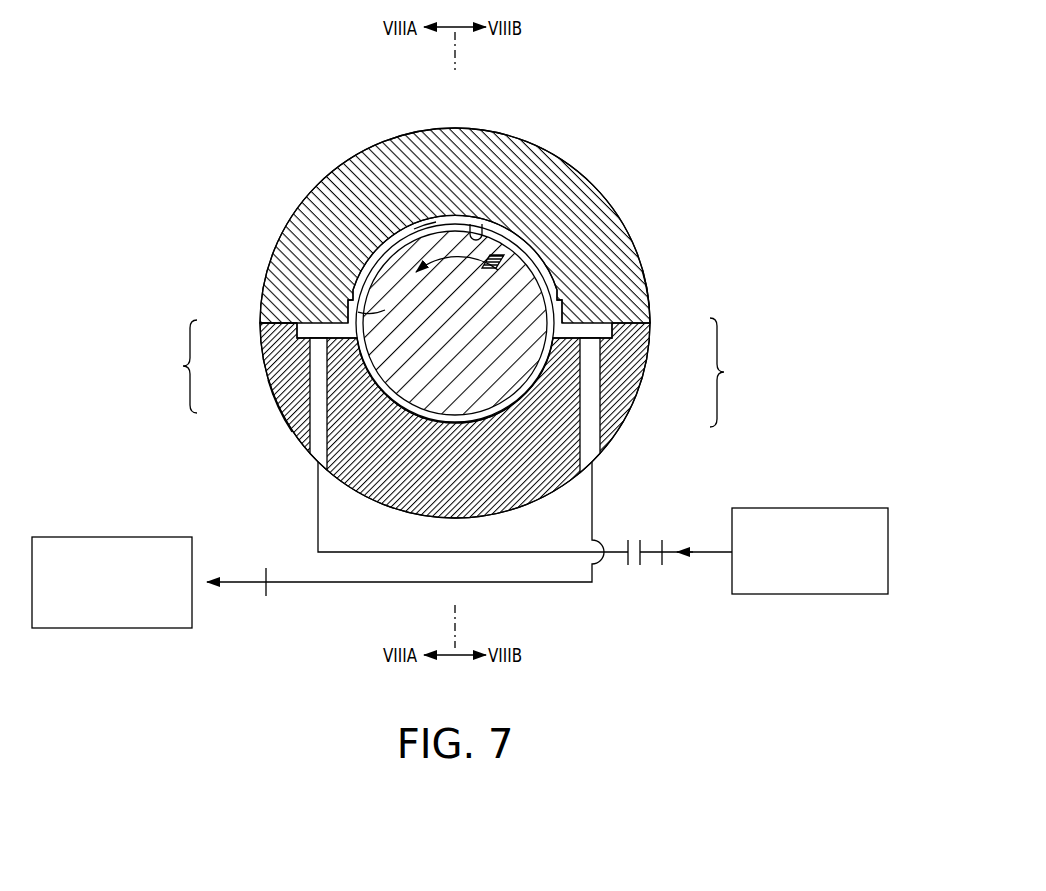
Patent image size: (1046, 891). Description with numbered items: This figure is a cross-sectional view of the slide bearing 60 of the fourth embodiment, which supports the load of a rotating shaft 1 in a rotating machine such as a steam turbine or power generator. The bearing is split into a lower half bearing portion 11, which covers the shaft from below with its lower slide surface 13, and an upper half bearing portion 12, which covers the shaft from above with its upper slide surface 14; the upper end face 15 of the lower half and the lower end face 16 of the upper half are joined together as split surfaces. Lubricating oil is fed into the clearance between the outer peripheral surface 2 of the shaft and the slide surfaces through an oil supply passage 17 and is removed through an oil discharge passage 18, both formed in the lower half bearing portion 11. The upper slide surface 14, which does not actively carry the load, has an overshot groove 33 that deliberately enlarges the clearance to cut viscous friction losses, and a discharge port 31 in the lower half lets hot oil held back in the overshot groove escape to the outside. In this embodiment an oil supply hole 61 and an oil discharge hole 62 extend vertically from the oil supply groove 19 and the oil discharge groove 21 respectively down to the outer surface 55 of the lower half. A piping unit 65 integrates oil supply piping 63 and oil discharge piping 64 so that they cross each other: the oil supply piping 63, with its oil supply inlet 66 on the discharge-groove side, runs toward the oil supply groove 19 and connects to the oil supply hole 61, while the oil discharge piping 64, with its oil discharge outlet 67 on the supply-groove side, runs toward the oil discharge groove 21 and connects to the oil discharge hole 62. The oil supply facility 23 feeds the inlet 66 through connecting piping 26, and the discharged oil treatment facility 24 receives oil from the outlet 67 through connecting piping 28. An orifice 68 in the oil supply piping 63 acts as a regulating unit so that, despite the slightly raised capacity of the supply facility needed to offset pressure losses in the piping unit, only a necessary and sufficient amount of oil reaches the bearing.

The rotating shaft 1 is at (532, 307).
The outer peripheral surface 2 is at (383, 262).
The lower half bearing portion 11 is at (549, 448).
The upper half bearing portion 12 is at (537, 168).
The lower slide surface 13 is at (375, 389).
The upper slide surface 14 is at (475, 230).
The upper end face 15 is at (646, 300).
The lower end face 16 is at (275, 322).
The oil supply passage 17 is at (174, 366).
The oil discharge passage 18 is at (734, 372).
The oil supply groove 19 is at (290, 331).
The oil discharge groove 21 is at (602, 333).
The oil supply facility 23 is at (846, 509).
The discharged oil treatment facility 24 is at (143, 538).
The connecting piping 26 is at (708, 551).
The connecting piping 28 is at (240, 581).
The discharge port 31 is at (353, 290).
The overshot groove 33 is at (420, 225).
The outer surface 55 is at (283, 430).
The slide bearing 60 is at (666, 143).
The oil supply hole 61 is at (318, 404).
The oil discharge hole 62 is at (591, 414).
The oil supply piping 63 is at (443, 551).
The oil discharge piping 64 is at (500, 583).
The piping unit 65 is at (608, 508).
The oil supply inlet 66 is at (663, 563).
The oil discharge outlet 67 is at (265, 591).
The orifice 68 is at (630, 569).